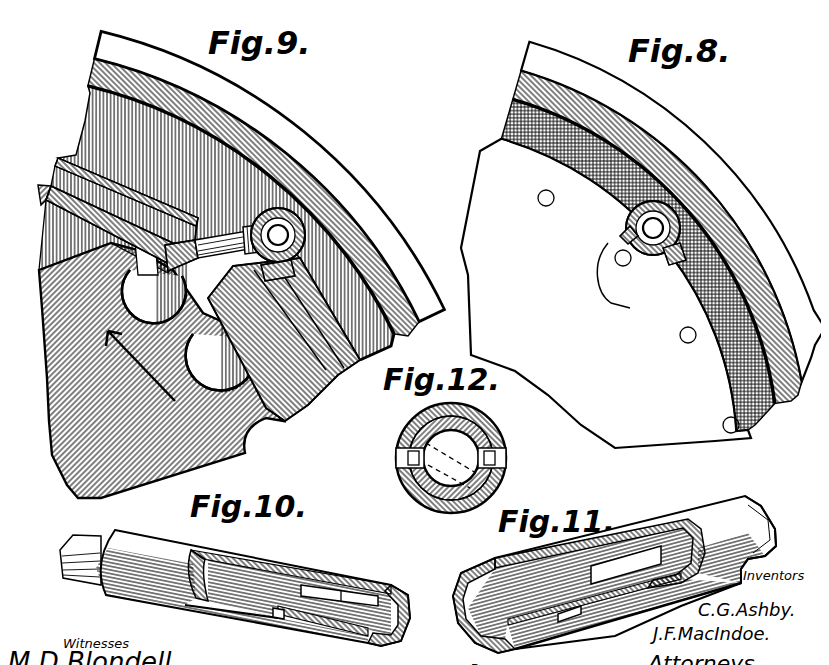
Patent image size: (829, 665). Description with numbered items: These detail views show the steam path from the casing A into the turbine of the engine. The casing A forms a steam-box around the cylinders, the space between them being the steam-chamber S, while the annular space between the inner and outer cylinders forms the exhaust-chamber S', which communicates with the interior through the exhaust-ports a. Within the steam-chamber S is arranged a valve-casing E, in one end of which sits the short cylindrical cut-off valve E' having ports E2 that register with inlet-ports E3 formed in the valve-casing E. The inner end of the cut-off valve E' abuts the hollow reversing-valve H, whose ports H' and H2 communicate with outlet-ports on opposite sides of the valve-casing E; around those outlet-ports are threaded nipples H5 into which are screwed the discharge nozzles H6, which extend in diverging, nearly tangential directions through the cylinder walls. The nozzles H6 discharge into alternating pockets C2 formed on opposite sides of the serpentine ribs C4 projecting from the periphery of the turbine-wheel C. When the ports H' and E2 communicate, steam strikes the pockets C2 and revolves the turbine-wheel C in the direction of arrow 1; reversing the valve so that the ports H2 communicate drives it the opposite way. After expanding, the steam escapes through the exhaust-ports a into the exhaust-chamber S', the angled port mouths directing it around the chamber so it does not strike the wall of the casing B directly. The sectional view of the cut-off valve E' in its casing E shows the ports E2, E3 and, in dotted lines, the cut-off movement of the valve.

In FIG. 9, the casing A is at (267, 143).
In FIG. 8, the casing A is at (650, 140).
In FIG. 9, the steam-chamber S is at (235, 197).
In FIG. 8, the steam-chamber S is at (637, 265).
In FIG. 9, the casing B is at (133, 203).
In FIG. 8, the casing B is at (606, 293).
In FIG. 9, the turbine-wheel C is at (161, 370).
In FIG. 9, the pockets C2 is at (77, 257).
In FIG. 9, the ribs C4 is at (97, 277).
In FIG. 9, the exhaust-ports a is at (43, 180).
In FIG. 9, the exhaust-chamber S' is at (126, 192).
In FIG. 9, the reversing-valve H is at (310, 193).
In FIG. 9, the ports H' is at (227, 223).
In FIG. 9, the ports H2 is at (297, 236).
In FIG. 9, the threaded nipples H5 is at (283, 262).
In FIG. 8, the threaded nipples H5 is at (642, 262).
In FIG. 9, the discharge nozzles H6 is at (185, 250).
In FIG. 9, the valve-casing E is at (322, 229).
In FIG. 8, the valve-casing E is at (684, 201).
In FIG. 12, the valve-casing E is at (462, 458).
In FIG. 11, the valve-casing E is at (614, 574).
In FIG. 8, the cut-off valve E' is at (657, 237).
In FIG. 12, the cut-off valve E' is at (451, 479).
In FIG. 10, the cut-off valve E' is at (235, 588).
In FIG. 8, the ports E2 is at (676, 212).
In FIG. 12, the ports E2 is at (400, 478).
In FIG. 10, the ports E2 is at (330, 590).
In FIG. 8, the inlet-ports E3 is at (680, 226).
In FIG. 12, the inlet-ports E3 is at (390, 450).
In FIG. 11, the inlet-ports E3 is at (603, 558).
In FIG. 9, the arrow 1 is at (140, 366).